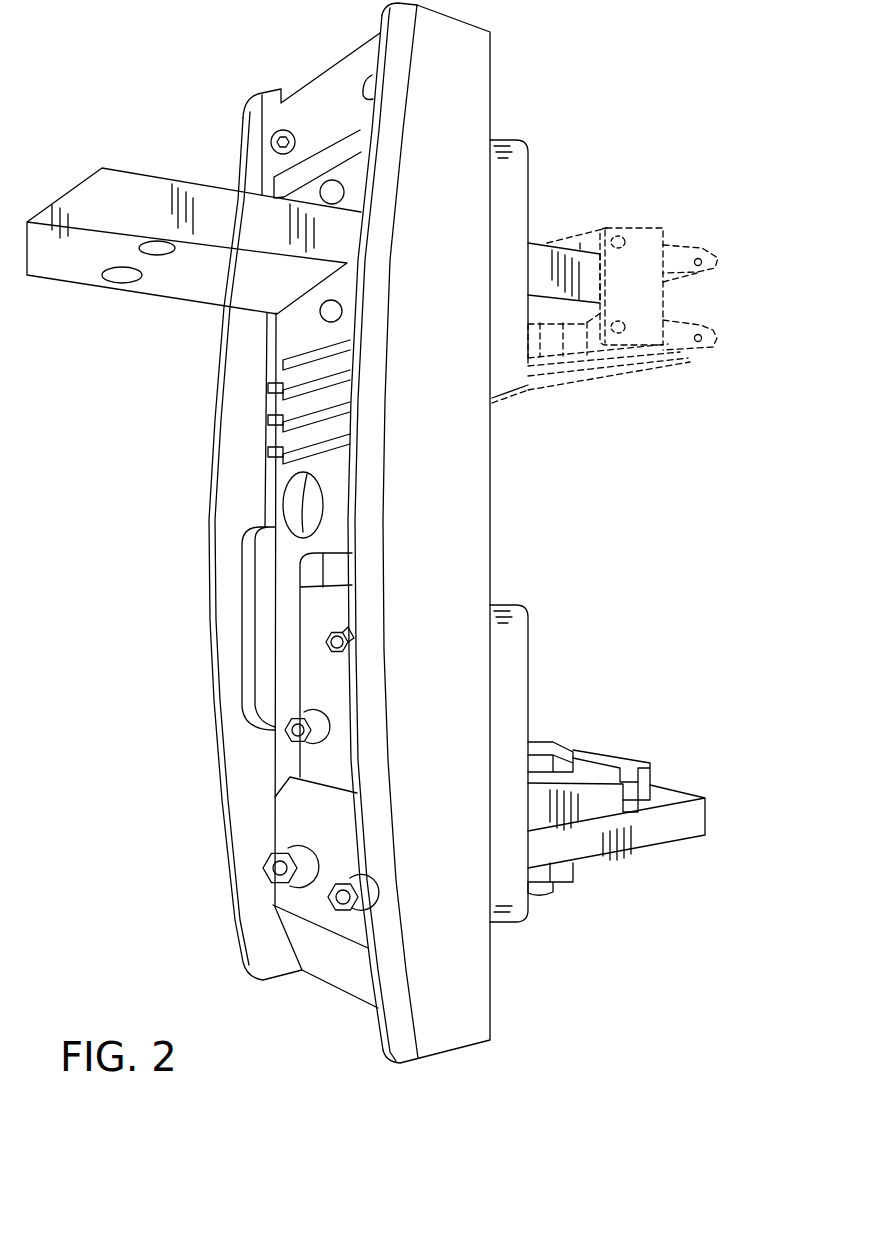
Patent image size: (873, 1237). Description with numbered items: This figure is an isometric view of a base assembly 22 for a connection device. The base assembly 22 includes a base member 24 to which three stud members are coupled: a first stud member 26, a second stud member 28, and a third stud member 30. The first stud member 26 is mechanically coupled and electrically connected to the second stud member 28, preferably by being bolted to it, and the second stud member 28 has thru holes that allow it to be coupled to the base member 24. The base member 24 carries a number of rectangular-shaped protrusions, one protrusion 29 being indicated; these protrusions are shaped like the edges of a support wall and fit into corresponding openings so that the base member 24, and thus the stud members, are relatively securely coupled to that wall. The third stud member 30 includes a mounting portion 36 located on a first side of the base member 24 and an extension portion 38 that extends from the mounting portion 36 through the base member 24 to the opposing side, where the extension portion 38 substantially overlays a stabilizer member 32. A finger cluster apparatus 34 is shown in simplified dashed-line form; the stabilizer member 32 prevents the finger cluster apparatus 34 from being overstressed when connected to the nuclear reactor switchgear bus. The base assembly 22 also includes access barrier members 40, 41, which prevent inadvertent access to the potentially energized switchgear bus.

The base assembly 22 is at (158, 568).
The base member 24 is at (495, 92).
The first stud member 26 is at (186, 181).
The second stud member 28 is at (547, 243).
The rectangular-shaped protrusion 29 is at (510, 360).
The third stud member 30 is at (640, 758).
The stabilizer member 32 is at (675, 845).
The finger cluster apparatus 34 is at (644, 232).
The mounting portion 36 is at (290, 822).
The extension portion 38 is at (582, 790).
The access barrier member 40 is at (326, 644).
The access barrier member 41 is at (287, 738).